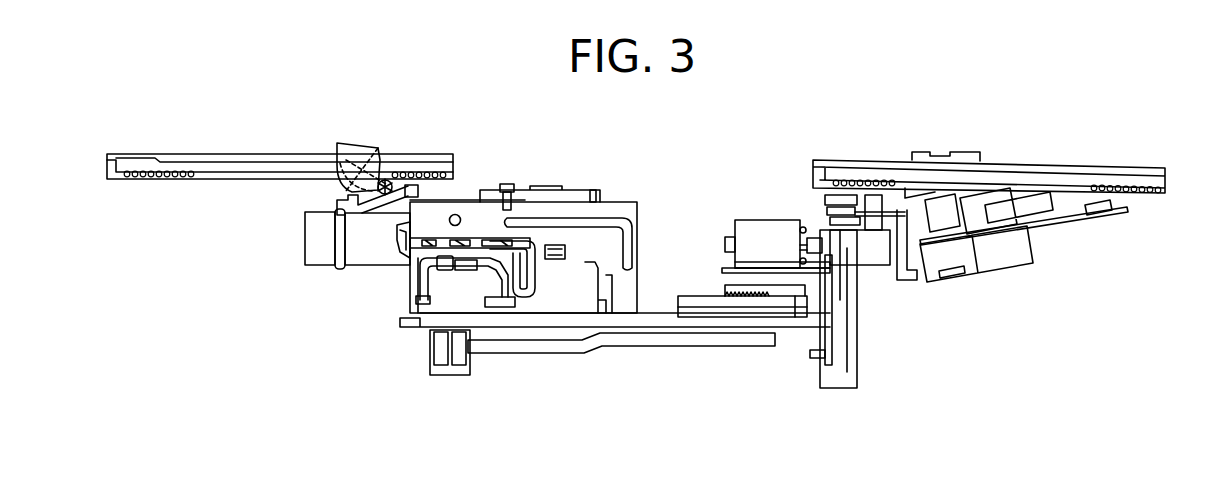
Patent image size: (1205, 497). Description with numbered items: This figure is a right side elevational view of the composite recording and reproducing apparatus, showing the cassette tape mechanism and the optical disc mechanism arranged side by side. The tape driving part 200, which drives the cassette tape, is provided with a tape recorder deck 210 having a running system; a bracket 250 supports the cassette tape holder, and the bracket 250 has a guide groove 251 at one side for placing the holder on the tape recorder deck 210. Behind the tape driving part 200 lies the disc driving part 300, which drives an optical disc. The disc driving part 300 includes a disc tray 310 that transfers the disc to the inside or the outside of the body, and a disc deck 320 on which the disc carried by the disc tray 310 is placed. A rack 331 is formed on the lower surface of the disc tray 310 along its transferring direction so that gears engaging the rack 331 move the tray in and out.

The tape driving part 200 is at (617, 347).
The tape recorder deck 210 is at (732, 323).
The bracket 250 is at (482, 220).
The guide groove 251 is at (610, 222).
The disc driving part 300 is at (1060, 158).
The disc tray 310 is at (117, 172).
The disc deck 320 is at (1083, 214).
The rack 331 is at (416, 175).